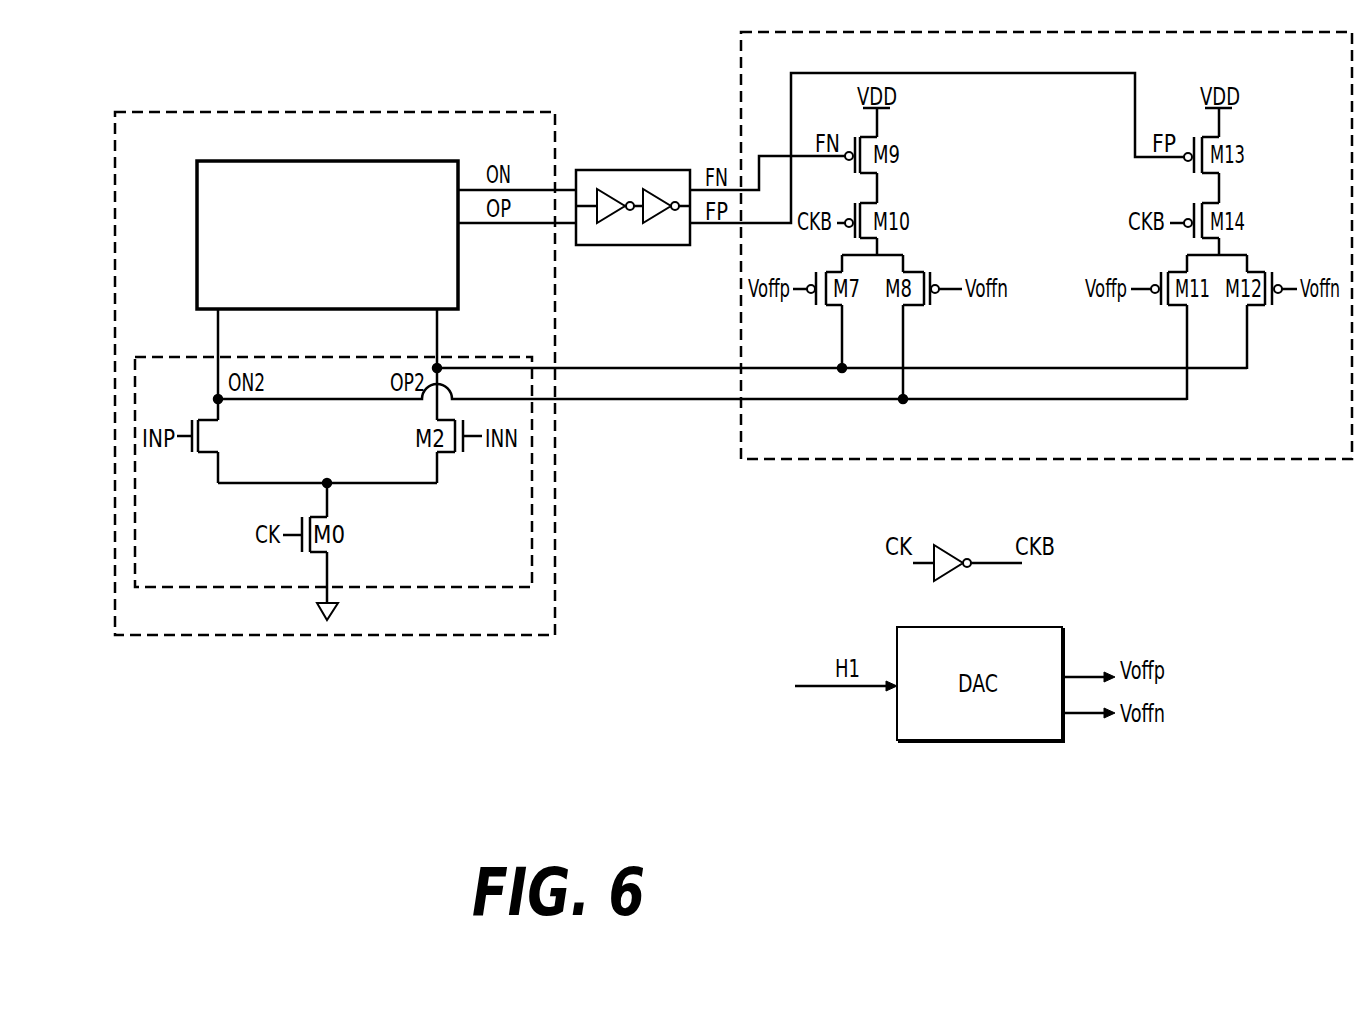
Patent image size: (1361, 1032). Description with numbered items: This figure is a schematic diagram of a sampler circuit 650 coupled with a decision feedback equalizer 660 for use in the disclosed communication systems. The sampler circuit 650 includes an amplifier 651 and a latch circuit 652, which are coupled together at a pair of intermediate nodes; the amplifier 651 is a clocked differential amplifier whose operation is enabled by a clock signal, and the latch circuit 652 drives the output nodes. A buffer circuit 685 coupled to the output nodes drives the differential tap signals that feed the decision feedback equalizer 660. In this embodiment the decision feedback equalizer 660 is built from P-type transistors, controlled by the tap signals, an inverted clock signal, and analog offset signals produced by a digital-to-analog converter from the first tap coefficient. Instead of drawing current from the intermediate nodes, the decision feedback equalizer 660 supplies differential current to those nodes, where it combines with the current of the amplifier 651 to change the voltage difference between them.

The sampler circuit 650 is at (535, 150).
The amplifier 651 is at (518, 485).
The latch circuit 652 is at (342, 290).
The decision feedback equalizer 660 is at (1340, 70).
The buffer circuit 685 is at (645, 170).